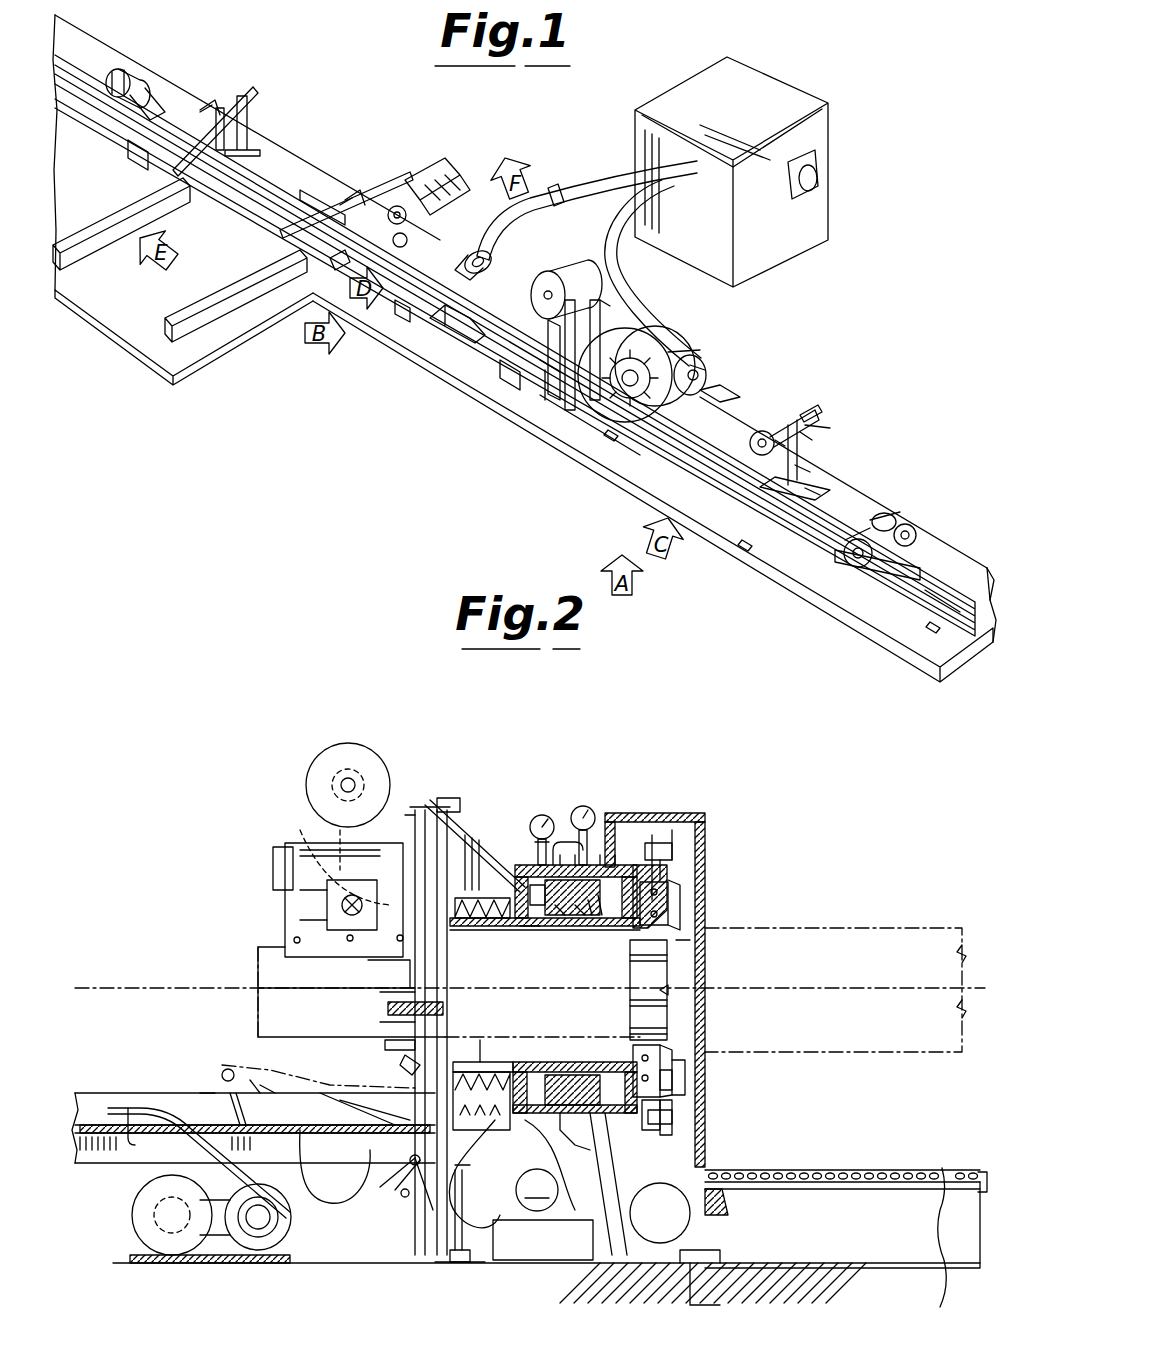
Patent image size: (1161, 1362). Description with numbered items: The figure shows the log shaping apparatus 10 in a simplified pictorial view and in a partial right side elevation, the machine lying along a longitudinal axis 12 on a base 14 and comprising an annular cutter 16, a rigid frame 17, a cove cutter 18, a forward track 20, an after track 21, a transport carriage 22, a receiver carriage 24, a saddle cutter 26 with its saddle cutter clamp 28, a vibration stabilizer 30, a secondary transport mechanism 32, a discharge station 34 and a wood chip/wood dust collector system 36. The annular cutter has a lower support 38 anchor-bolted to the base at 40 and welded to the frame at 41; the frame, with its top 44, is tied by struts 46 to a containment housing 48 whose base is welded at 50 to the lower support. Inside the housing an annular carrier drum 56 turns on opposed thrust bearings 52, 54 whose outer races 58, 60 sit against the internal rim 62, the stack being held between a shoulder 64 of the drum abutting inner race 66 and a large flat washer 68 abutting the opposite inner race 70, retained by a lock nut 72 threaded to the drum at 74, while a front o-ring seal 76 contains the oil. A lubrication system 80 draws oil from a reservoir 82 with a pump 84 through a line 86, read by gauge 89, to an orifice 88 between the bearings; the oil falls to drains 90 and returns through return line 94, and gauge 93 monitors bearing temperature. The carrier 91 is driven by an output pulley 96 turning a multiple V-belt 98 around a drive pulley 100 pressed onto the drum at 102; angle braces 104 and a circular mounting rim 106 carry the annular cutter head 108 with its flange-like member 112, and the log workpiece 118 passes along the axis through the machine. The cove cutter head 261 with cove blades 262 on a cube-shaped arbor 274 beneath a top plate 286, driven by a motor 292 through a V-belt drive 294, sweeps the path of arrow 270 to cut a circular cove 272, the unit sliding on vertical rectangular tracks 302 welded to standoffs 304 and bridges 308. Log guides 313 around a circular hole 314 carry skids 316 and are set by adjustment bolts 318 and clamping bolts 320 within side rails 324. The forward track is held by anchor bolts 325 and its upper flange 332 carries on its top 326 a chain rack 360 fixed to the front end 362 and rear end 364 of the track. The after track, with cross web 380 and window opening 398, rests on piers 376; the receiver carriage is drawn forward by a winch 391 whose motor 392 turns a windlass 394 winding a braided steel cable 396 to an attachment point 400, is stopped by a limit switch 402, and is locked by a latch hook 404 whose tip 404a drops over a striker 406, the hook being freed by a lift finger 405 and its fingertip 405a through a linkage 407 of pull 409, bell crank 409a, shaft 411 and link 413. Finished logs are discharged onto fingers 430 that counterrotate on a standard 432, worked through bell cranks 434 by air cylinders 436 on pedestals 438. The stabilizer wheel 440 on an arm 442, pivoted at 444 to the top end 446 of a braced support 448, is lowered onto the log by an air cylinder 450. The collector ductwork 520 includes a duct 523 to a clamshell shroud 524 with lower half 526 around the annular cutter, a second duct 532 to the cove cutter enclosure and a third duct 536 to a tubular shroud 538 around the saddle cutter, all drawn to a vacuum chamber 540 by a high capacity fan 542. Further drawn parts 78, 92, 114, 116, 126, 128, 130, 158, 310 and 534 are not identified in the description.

In FIG. 1, the apparatus 10 is at (792, 347).
In FIG. 1, the pipe/track 12 is at (197, 95).
In FIG. 2, the pipe/track 12 is at (862, 988).
In FIG. 1, the foundation slab 14 is at (140, 360).
In FIG. 2, the foundation slab 14 is at (812, 1262).
In FIG. 1, the blower unit 16 is at (656, 322).
In FIG. 2, the blower unit 16 is at (738, 891).
In FIG. 1, the support post 17 is at (520, 395).
In FIG. 2, the support post 17 is at (442, 800).
In FIG. 1, the drive unit 18 is at (577, 266).
In FIG. 2, the drive unit 18 is at (333, 723).
In FIG. 1, the trench/foundation 20 is at (803, 542).
In FIG. 2, the trench/foundation 20 is at (903, 1242).
In FIG. 1, the bar 21 is at (343, 262).
In FIG. 2, the bar 21 is at (147, 1092).
In FIG. 1, the rear carriage 22 is at (903, 528).
In FIG. 1, the front drive 24 is at (119, 119).
In FIG. 1, the motor 26 is at (483, 256).
In FIG. 1, the bracket 28 is at (448, 358).
In FIG. 1, the guide assembly 30 is at (775, 418).
In FIG. 1, the roller bracket 32 is at (440, 165).
In FIG. 1, the support assembly 34 is at (320, 128).
In FIG. 1, the control cabinet 36 is at (622, 144).
In FIG. 2, the bracket 38 is at (492, 1186).
In FIG. 2, the base nut 40 is at (472, 1263).
In FIG. 2, the base plate 41 is at (455, 1263).
In FIG. 2, the plate 44 is at (445, 798).
In FIG. 2, the housing insert 46 is at (515, 875).
In FIG. 2, the upper housing 48 is at (518, 866).
In FIG. 2, the gear box 50 is at (506, 1128).
In FIG. 2, the fitting 52 is at (562, 864).
In FIG. 2, the fitting 54 is at (601, 864).
In FIG. 2, the bearing 56 is at (600, 922).
In FIG. 2, the pipe loop 58 is at (555, 848).
In FIG. 2, the fitting 60 is at (615, 864).
In FIG. 2, the axis line 62 is at (630, 1045).
In FIG. 2, the bolt 64 is at (668, 880).
In FIG. 2, the wall 66 is at (678, 942).
In FIG. 2, the seal 68 is at (580, 920).
In FIG. 2, the seal 70 is at (590, 920).
In FIG. 2, the ring 72 is at (560, 918).
In FIG. 2, the plate 74 is at (525, 926).
In FIG. 2, the wedge 76 is at (648, 864).
In FIG. 2, the base plate 78 is at (500, 926).
In FIG. 2, the ground 80 is at (560, 1278).
In FIG. 2, the pump box 82 is at (555, 1253).
In FIG. 2, the pump 84 is at (537, 1190).
In FIG. 2, the gauge 86 is at (545, 814).
In FIG. 2, the gauge 88 is at (595, 865).
In FIG. 2, the fitting 89 is at (576, 864).
In FIG. 2, the pipe 90 is at (603, 1118).
In FIG. 2, the housing 91 is at (704, 817).
In FIG. 2, the pipe 92 is at (608, 1132).
In FIG. 2, the pipe 93 is at (538, 830).
In FIG. 1, the inlet 94 is at (682, 336).
In FIG. 2, the inlet 94 is at (686, 1075).
In FIG. 2, the lower housing 96 is at (513, 1062).
In FIG. 2, the plate 98 is at (475, 1062).
In FIG. 2, the ribs 100 is at (482, 880).
In FIG. 2, the block 102 is at (530, 888).
In FIG. 2, the bracket 104 is at (665, 1110).
In FIG. 2, the bolt 106 is at (660, 845).
In FIG. 2, the plate 108 is at (682, 915).
In FIG. 2, the block 112 is at (674, 1098).
In FIG. 2, the ring 114 is at (670, 1005).
In FIG. 2, the ring 116 is at (670, 1022).
In FIG. 2, the workpiece 118 is at (258, 973).
In FIG. 2, the bracket 126 is at (685, 898).
In FIG. 2, the bracket 128 is at (675, 1052).
In FIG. 2, the column 130 is at (672, 988).
In FIG. 2, the nut 158 is at (672, 850).
In FIG. 2, the shaft 261 is at (338, 820).
In FIG. 2, the plate 262 is at (320, 892).
In FIG. 2, the gear box 270 is at (327, 882).
In FIG. 2, the line 272 is at (262, 945).
In FIG. 2, the plate 274 is at (330, 858).
In FIG. 2, the bracket 286 is at (310, 835).
In FIG. 2, the wheel 292 is at (318, 770).
In FIG. 2, the arc 294 is at (318, 818).
In FIG. 2, the block 302 is at (368, 962).
In FIG. 2, the plate 304 is at (385, 994).
In FIG. 2, the cap 308 is at (413, 800).
In FIG. 2, the column 310 is at (435, 803).
In FIG. 2, the gear 313 is at (462, 896).
In FIG. 2, the plate 314 is at (400, 1025).
In FIG. 2, the plate 316 is at (388, 1008).
In FIG. 2, the tab 318 is at (458, 1163).
In FIG. 2, the rod 320 is at (482, 1050).
In FIG. 2, the clip 324 is at (405, 1062).
In FIG. 1, the anchor clip 325 is at (606, 434).
In FIG. 2, the anchor clip 325 is at (700, 1292).
In FIG. 2, the strip 326 is at (883, 1189).
In FIG. 2, the edge 332 is at (943, 1170).
In FIG. 1, the chain 360 is at (940, 598).
In FIG. 2, the chain 360 is at (828, 1170).
In FIG. 1, the edge 362 is at (987, 665).
In FIG. 2, the edge 362 is at (983, 1170).
In FIG. 2, the block 364 is at (727, 1200).
In FIG. 1, the block 376 is at (128, 150).
In FIG. 2, the post 380 is at (236, 1095).
In FIG. 2, the wheel assembly 391 is at (224, 1277).
In FIG. 2, the wheel 392 is at (165, 1256).
In FIG. 2, the wheel 394 is at (290, 1250).
In FIG. 2, the hook 396 is at (125, 1145).
In FIG. 2, the rod 398 is at (200, 1130).
In FIG. 2, the bracket 400 is at (208, 1088).
In FIG. 2, the plate 402 is at (410, 1045).
In FIG. 2, the lever 404 is at (310, 1064).
In FIG. 2, the pivot 404a is at (240, 1068).
In FIG. 2, the spring 405 is at (313, 1200).
In FIG. 2, the end 405a is at (270, 1080).
In FIG. 2, the pin 406 is at (255, 1075).
In FIG. 2, the pivot 407 is at (404, 1198).
In FIG. 2, the rod 409 is at (460, 1185).
In FIG. 2, the link 409a is at (420, 1215).
In FIG. 2, the link 411 is at (408, 1214).
In FIG. 2, the pivot 413 is at (405, 1175).
In FIG. 1, the rod 430 is at (165, 152).
In FIG. 1, the clamp 432 is at (240, 140).
In FIG. 1, the rod end 434 is at (205, 110).
In FIG. 1, the post 436 is at (250, 95).
In FIG. 1, the post 438 is at (250, 118).
In FIG. 1, the roller 440 is at (786, 446).
In FIG. 1, the arm 442 is at (822, 410).
In FIG. 1, the bracket 444 is at (832, 426).
In FIG. 1, the pin 446 is at (812, 438).
In FIG. 1, the base 448 is at (818, 492).
In FIG. 1, the post 450 is at (808, 470).
In FIG. 1, the hose 520 is at (597, 174).
In FIG. 1, the plate 523 is at (714, 386).
In FIG. 1, the ring 524 is at (690, 352).
In FIG. 1, the hub 526 is at (700, 370).
In FIG. 1, the hose 532 is at (622, 275).
In FIG. 1, the bracket 534 is at (513, 360).
In FIG. 1, the collar 536 is at (550, 180).
In FIG. 1, the nozzle 538 is at (468, 256).
In FIG. 1, the cabinet 540 is at (710, 132).
In FIG. 1, the knob 542 is at (822, 175).